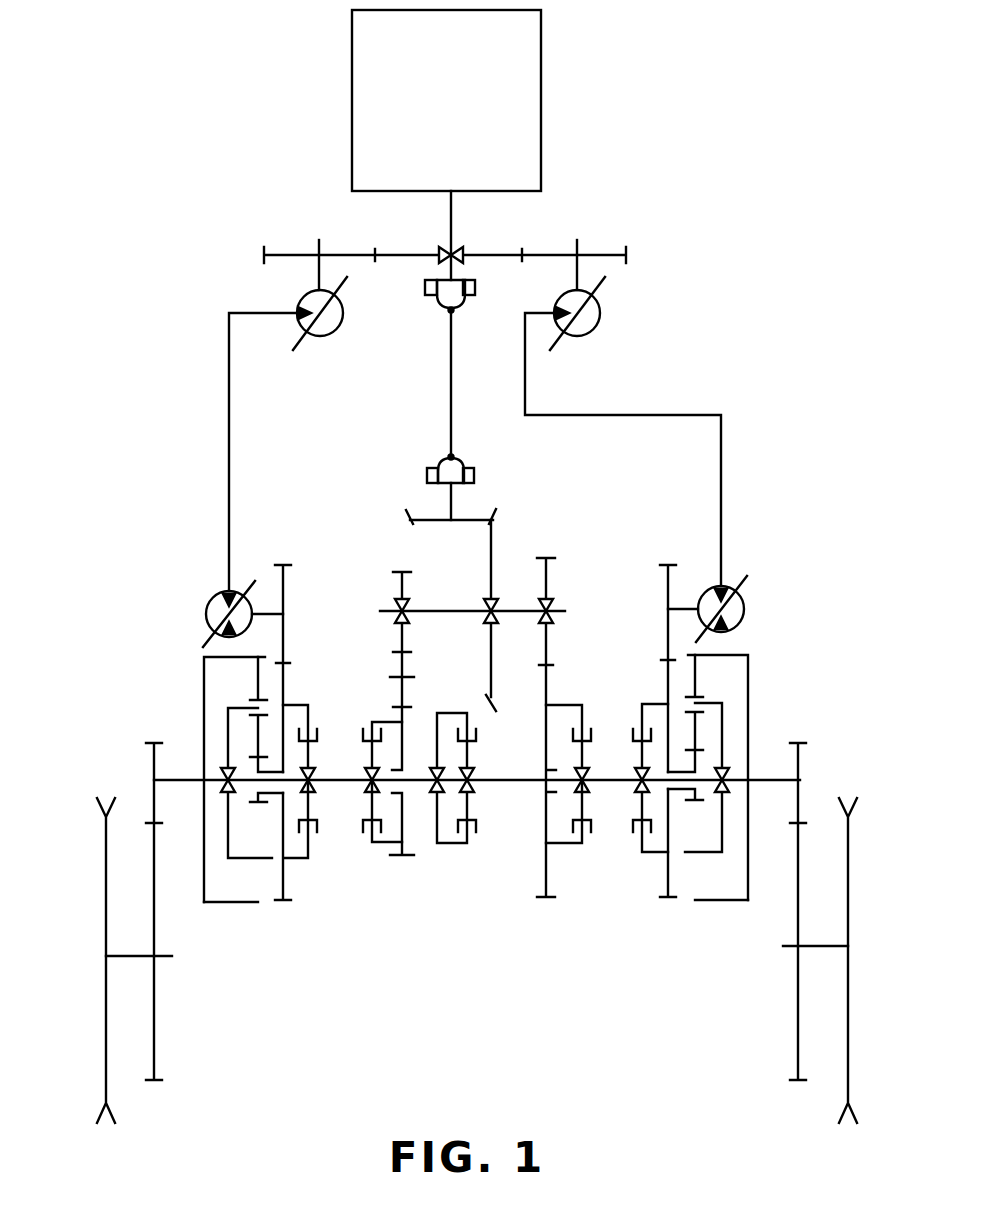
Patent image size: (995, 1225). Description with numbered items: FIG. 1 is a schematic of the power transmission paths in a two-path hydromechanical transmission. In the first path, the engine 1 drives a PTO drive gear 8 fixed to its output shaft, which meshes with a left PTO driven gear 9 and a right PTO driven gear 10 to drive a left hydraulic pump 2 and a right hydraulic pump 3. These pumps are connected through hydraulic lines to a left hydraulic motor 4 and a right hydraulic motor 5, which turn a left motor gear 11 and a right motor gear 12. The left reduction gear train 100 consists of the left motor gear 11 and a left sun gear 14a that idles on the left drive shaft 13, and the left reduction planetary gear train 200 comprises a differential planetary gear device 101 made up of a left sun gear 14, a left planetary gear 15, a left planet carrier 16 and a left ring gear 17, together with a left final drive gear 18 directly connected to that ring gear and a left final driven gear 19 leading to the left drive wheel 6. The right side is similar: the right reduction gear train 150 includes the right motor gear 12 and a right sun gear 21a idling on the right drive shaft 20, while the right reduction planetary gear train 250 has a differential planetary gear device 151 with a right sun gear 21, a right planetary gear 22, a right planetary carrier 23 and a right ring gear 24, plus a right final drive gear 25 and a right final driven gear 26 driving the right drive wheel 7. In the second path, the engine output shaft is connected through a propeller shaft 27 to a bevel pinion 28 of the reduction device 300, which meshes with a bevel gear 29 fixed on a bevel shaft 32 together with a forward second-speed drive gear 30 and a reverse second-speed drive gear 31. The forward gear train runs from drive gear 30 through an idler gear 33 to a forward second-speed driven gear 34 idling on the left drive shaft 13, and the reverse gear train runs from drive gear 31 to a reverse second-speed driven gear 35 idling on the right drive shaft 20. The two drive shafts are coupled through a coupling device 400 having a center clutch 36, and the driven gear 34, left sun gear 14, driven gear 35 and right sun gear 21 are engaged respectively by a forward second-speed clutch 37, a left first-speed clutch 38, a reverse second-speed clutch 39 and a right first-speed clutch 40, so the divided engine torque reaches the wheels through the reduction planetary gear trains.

The engine 1 is at (541, 121).
The left hydraulic pump 2 is at (337, 330).
The right hydraulic pump 3 is at (594, 330).
The left hydraulic motor 4 is at (206, 600).
The right hydraulic motor 5 is at (745, 612).
The left drive wheel 6 is at (105, 890).
The right drive wheel 7 is at (848, 872).
The PTO drive gear 8 is at (480, 255).
The left PTO driven gear 9 is at (291, 254).
The right PTO driven gear 10 is at (606, 255).
The left motor gear 11 is at (290, 635).
The right motor gear 12 is at (667, 633).
The left drive shaft 13 is at (318, 780).
The left sun gear 14 is at (272, 795).
The left sun gear 14a is at (283, 880).
The left planetary gear 15 is at (253, 675).
The left planet carrier 16 is at (247, 862).
The left ring gear 17 is at (233, 907).
The left final drive gear 18 is at (150, 775).
The left final driven gear 19 is at (155, 1023).
The right drive shaft 20 is at (510, 778).
The right sun gear 21 is at (690, 795).
The right sun gear 21a is at (667, 880).
The right planetary gear 22 is at (702, 698).
The right planetary carrier 23 is at (707, 855).
The right ring gear 24 is at (730, 903).
The right final drive gear 25 is at (800, 760).
The right final driven gear 26 is at (797, 1023).
The propeller shaft 27 is at (450, 410).
The bevel pinion 28 is at (423, 513).
The bevel gear 29 is at (490, 583).
The forward second-speed drive gear 30 is at (397, 590).
The reverse second-speed drive gear 31 is at (547, 585).
The bevel shaft 32 is at (437, 617).
The idler gear 33 is at (397, 667).
The forward second-speed driven gear 34 is at (405, 840).
The reverse second-speed driven gear 35 is at (547, 695).
The center clutch 36 is at (470, 805).
The forward second-speed clutch 37 is at (373, 838).
The left first-speed clutch 38 is at (310, 845).
The reverse second-speed clutch 39 is at (583, 840).
The right first-speed clutch 40 is at (642, 848).
The left reduction gear train 100 is at (240, 809).
The differential planetary gear device 101 is at (197, 675).
The right reduction gear train 150 is at (708, 810).
The differential planetary gear device 151 is at (757, 665).
The left reduction planetary gear train 200 is at (136, 872).
The right reduction planetary gear train 250 is at (824, 873).
The reduction device 300 is at (480, 688).
The coupling device 400 is at (434, 833).